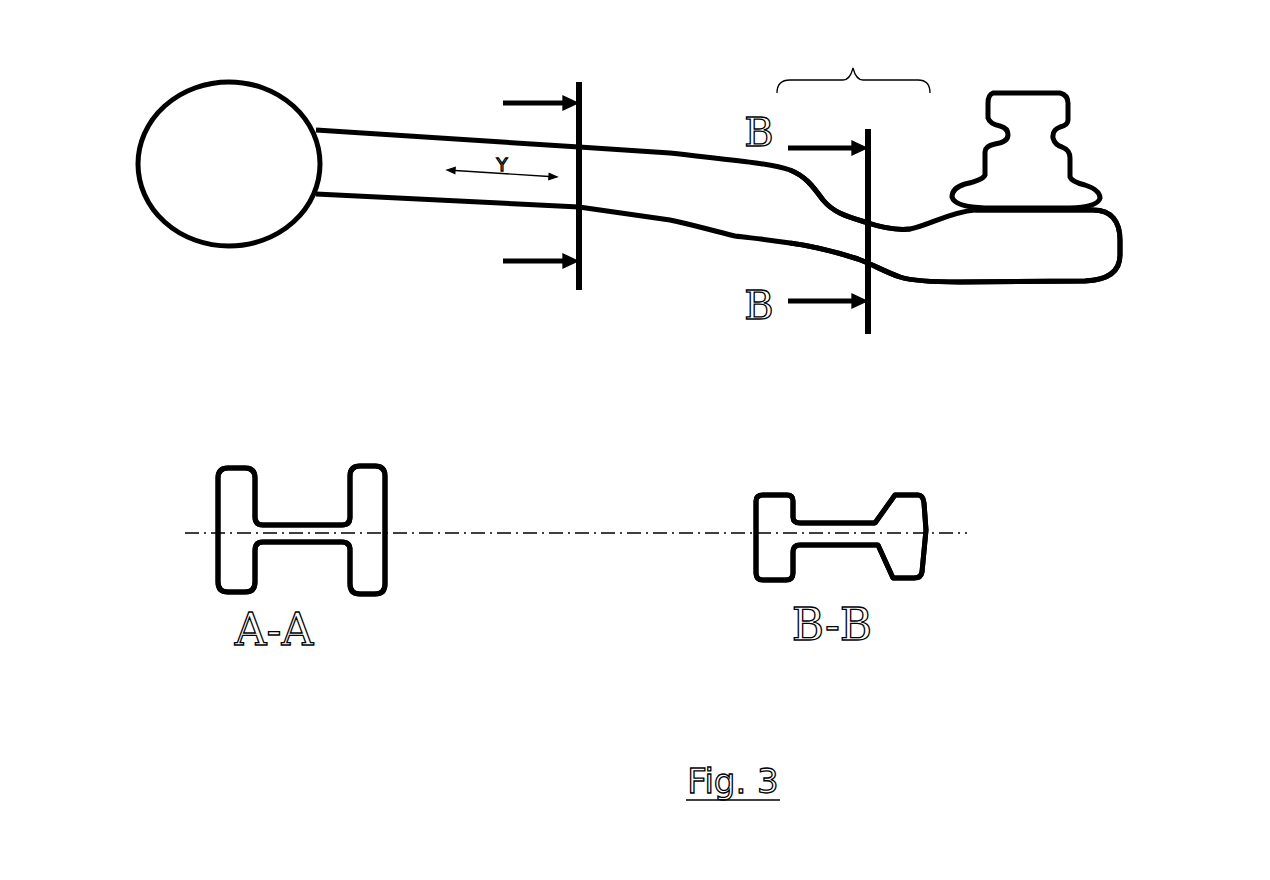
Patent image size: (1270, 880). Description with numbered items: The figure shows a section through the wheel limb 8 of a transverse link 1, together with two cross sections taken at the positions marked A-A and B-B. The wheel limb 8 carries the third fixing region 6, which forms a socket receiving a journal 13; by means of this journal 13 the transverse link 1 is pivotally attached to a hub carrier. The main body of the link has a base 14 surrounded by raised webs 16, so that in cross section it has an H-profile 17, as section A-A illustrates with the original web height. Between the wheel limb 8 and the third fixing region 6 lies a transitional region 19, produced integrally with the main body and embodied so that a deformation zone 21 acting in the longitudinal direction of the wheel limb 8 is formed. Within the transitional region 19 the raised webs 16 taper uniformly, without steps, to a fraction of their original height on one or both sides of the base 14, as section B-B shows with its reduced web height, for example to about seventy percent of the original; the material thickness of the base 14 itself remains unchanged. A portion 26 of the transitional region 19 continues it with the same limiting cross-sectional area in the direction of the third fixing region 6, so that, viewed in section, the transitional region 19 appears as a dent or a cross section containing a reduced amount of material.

The transverse link 1 is at (350, 238).
The third fixing region 6 is at (1090, 243).
The wheel limb 8 is at (481, 403).
The journal 13 is at (1050, 155).
The base 14 is at (306, 535).
The raised webs 16 is at (215, 478).
The H-profile 17 is at (169, 581).
The transitional region 19 is at (880, 253).
The deformation zone 21 is at (853, 131).
The portion of the transitional region 26 is at (900, 263).